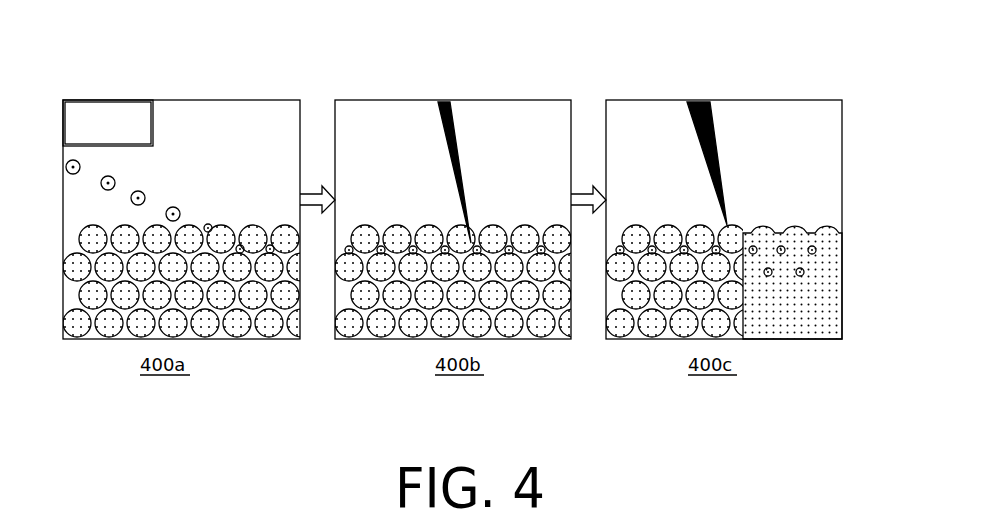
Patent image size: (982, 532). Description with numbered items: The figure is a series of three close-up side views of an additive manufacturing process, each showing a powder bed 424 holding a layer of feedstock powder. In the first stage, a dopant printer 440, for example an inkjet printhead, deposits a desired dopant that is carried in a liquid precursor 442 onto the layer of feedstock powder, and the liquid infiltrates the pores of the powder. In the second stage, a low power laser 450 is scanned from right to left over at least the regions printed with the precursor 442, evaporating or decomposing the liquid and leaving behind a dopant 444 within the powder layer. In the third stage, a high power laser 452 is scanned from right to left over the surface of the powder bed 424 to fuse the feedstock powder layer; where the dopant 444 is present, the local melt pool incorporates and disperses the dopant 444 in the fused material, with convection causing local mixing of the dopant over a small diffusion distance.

The powder bed 424 is at (60, 288).
The dopant printer 440 is at (92, 100).
The liquid precursor 442 is at (143, 191).
The dopant 444 is at (393, 245).
The laser 450 is at (443, 100).
The laser 452 is at (698, 100).